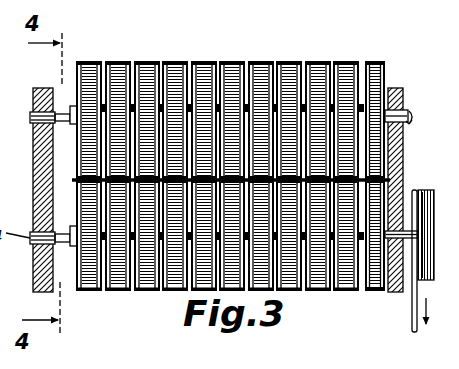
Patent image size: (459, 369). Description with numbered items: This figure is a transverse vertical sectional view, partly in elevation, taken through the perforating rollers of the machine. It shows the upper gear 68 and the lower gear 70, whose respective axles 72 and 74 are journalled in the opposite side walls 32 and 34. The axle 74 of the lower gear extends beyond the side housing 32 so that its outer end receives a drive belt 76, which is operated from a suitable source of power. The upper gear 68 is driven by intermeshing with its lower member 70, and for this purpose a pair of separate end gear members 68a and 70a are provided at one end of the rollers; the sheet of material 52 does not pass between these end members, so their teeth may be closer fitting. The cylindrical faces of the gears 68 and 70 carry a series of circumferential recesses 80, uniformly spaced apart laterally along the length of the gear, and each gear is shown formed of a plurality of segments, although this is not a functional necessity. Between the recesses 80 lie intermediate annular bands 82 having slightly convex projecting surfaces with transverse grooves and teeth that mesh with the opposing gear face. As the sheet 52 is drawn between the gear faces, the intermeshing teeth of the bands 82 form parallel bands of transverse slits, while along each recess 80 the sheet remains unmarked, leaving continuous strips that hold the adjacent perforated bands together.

The side wall 32 is at (396, 88).
The side wall 34 is at (45, 89).
The sheet of material 52 is at (75, 180).
The upper gear 68 is at (75, 149).
The end gear member 68a is at (378, 62).
The lower gear 70 is at (75, 201).
The end gear member 70a is at (374, 291).
The axle 72 is at (30, 124).
The axle 74 is at (430, 190).
The drive belt 76 is at (413, 330).
The circumferential recesses 80 is at (152, 291).
The annular bands 82 is at (119, 291).